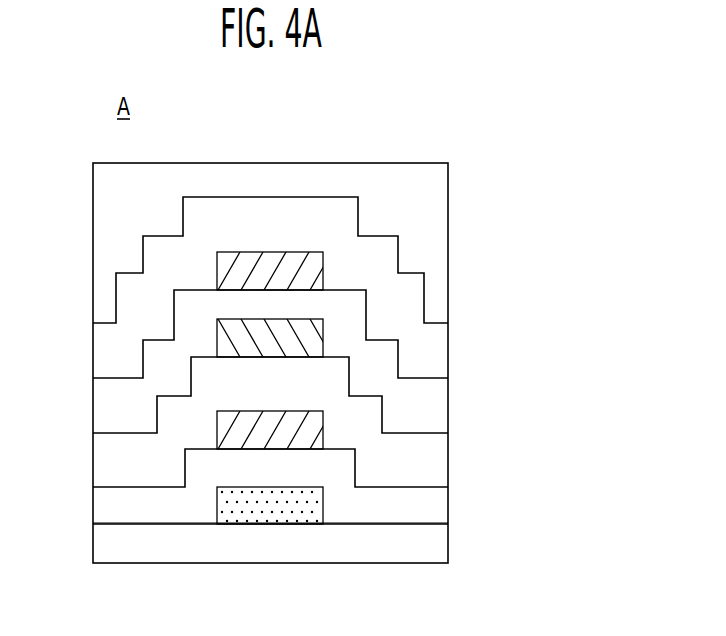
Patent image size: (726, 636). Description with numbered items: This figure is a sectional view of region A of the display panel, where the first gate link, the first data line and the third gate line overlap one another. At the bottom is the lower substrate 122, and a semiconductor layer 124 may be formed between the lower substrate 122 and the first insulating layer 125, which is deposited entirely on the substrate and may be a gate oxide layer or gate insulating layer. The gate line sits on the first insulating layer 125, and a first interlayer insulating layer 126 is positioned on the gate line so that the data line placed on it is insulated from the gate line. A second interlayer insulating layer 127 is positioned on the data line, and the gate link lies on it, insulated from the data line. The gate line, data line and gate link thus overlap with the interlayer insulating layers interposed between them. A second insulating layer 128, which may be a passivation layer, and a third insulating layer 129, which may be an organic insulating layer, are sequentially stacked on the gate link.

The lower substrate 122 is at (93, 552).
The semiconductor layer 124 is at (308, 507).
The first insulating layer 125 is at (93, 507).
The first interlayer insulating layer 126 is at (93, 457).
The second interlayer insulating layer 127 is at (93, 406).
The second insulating layer 128 is at (93, 354).
The third insulating layer 129 is at (93, 249).